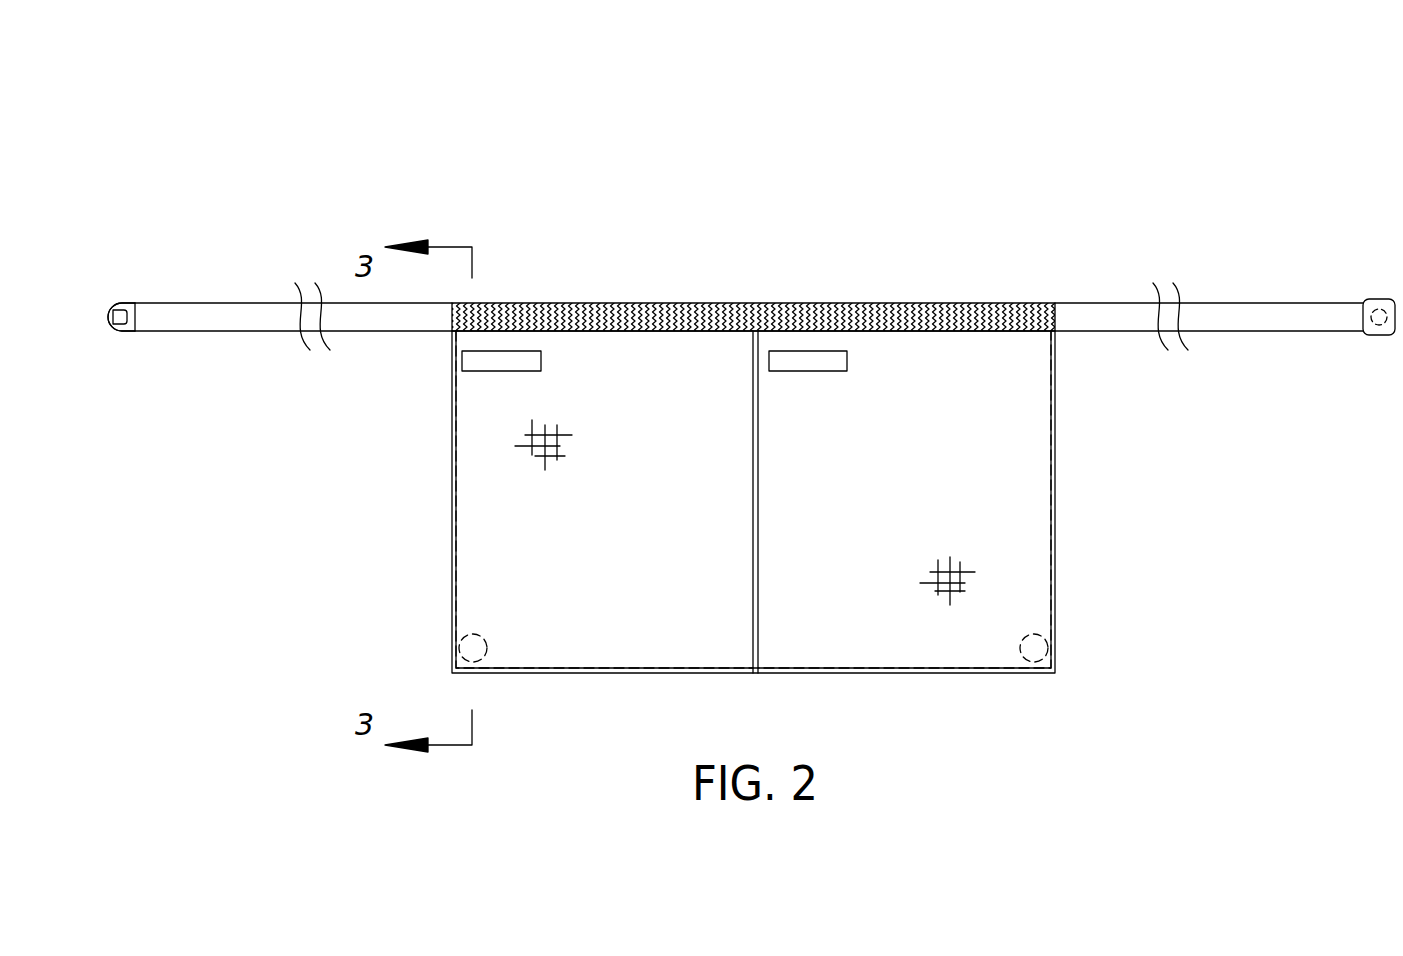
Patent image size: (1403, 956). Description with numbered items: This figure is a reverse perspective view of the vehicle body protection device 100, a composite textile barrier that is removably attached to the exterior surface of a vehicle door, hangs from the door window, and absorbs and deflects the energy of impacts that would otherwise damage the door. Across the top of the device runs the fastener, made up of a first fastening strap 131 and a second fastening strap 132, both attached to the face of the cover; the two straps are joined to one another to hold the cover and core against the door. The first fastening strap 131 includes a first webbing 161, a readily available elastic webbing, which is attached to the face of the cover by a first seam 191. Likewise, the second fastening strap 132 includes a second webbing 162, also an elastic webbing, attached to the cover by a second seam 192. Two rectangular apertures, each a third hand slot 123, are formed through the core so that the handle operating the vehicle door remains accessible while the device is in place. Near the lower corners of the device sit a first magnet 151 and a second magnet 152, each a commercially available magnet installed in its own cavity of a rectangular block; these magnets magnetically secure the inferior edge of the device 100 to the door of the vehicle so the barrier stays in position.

The vehicle body protection device 100 is at (746, 364).
The third hand slot 123 is at (485, 372).
The first fastening strap 131 is at (1388, 299).
The second fastening strap 132 is at (118, 303).
The first magnet 151 is at (1040, 647).
The second magnet 152 is at (470, 645).
The first webbing 161 is at (1232, 331).
The second webbing 162 is at (243, 331).
The first seam 191 is at (946, 331).
The second seam 192 is at (600, 331).